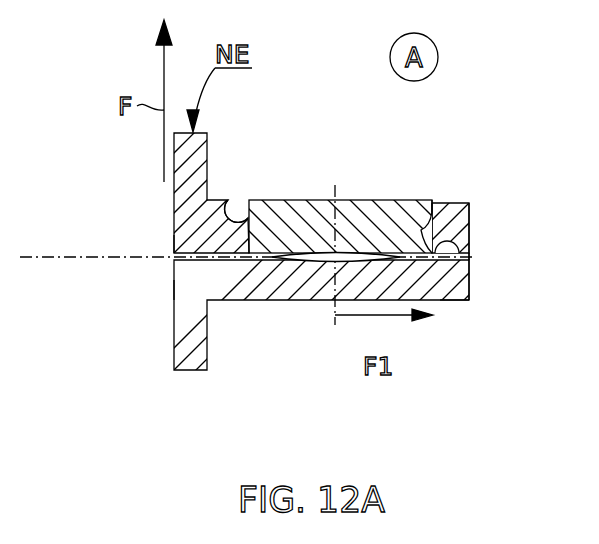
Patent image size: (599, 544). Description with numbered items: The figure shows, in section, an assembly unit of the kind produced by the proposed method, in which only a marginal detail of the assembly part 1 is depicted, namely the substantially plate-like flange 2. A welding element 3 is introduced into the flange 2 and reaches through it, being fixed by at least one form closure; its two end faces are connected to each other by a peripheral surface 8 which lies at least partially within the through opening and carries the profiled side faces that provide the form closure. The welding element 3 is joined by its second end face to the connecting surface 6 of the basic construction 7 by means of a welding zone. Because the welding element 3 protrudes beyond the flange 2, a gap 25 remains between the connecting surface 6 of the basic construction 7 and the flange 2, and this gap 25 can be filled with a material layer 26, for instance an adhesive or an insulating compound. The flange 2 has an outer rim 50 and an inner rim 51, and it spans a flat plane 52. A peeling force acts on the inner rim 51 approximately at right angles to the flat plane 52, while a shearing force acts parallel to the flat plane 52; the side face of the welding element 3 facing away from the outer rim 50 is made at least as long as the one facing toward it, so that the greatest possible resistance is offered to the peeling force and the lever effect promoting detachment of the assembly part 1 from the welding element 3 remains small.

The assembly part 1 is at (466, 194).
The flange 2 is at (455, 227).
The welding element 3 is at (383, 203).
The connecting surface 6 is at (455, 283).
The basic construction 7 is at (247, 288).
The peripheral surface 8 is at (222, 208).
The gap 25 is at (172, 255).
The material layer 26 is at (174, 290).
The outer rim 50 is at (470, 245).
The inner rim 51 is at (174, 232).
The flat plane 52 is at (60, 257).